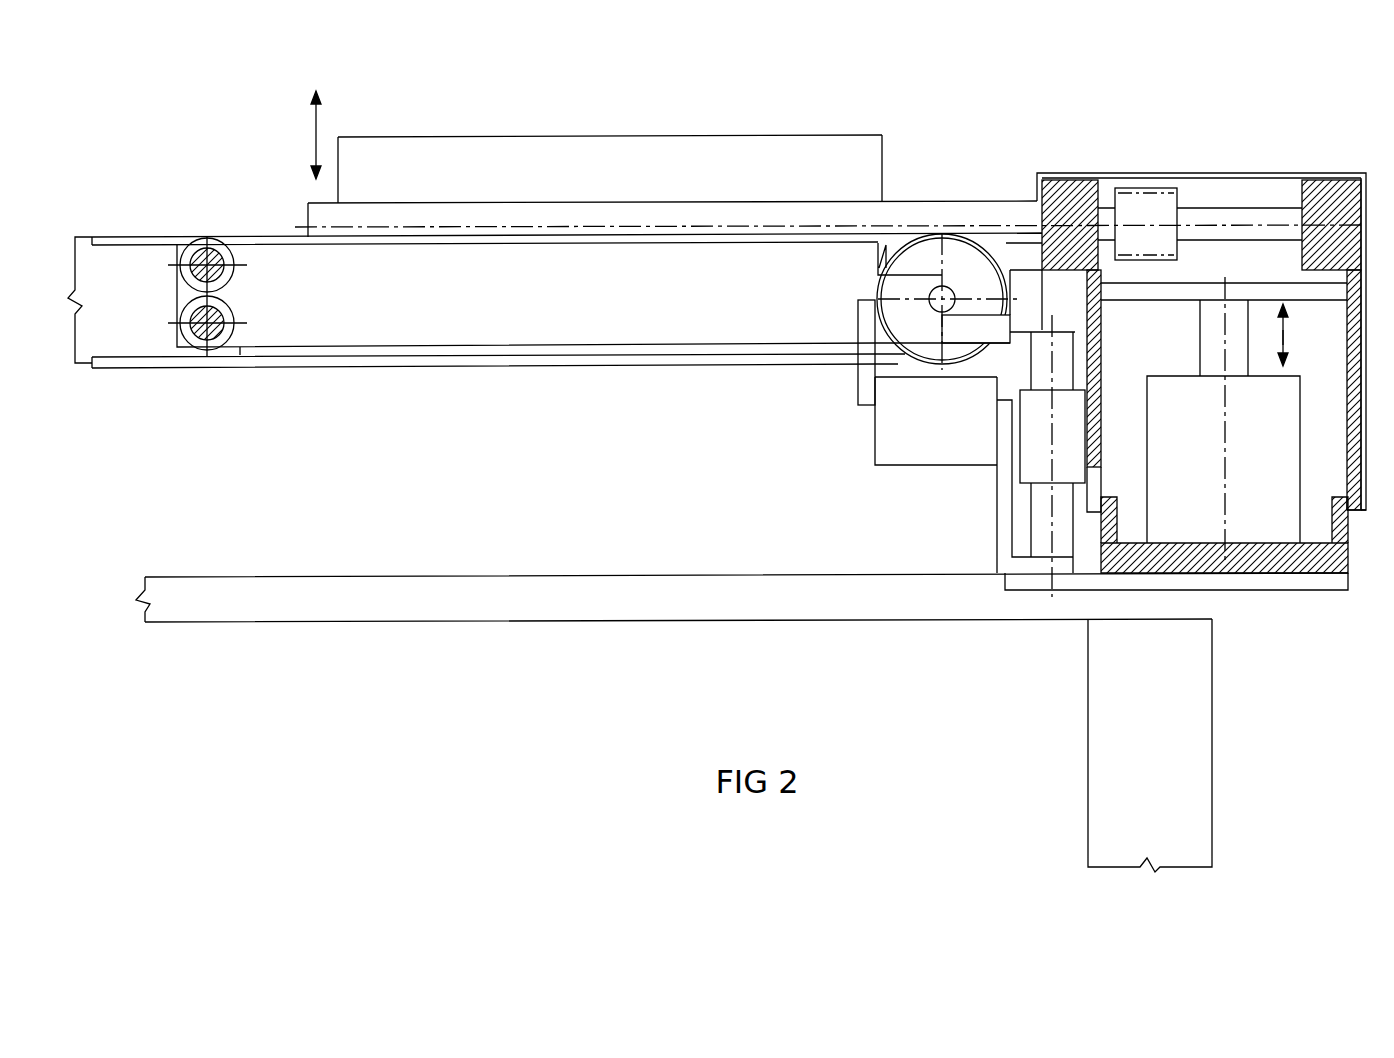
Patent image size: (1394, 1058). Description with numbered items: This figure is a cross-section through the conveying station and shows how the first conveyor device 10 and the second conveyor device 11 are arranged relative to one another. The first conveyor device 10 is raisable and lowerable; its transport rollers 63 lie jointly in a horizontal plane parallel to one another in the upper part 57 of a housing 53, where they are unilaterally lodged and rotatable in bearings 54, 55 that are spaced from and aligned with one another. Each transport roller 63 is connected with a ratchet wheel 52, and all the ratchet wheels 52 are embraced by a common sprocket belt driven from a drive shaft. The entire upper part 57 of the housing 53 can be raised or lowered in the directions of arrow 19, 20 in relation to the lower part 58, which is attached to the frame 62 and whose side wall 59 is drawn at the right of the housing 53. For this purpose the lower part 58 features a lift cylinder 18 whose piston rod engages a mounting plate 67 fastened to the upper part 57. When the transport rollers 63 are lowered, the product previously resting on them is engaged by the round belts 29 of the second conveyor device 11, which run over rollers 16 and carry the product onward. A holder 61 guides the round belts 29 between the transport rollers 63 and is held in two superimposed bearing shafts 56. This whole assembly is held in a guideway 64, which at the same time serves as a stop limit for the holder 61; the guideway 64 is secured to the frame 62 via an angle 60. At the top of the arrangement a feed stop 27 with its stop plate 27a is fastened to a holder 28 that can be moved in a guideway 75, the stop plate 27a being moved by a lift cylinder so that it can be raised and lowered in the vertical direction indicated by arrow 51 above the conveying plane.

The first conveyor device 10 is at (912, 212).
The second conveyor device 11 is at (148, 222).
The rollers 16 is at (960, 270).
The lift cylinder 18 is at (1178, 440).
The arrow 19 is at (1283, 327).
The arrow 20 is at (1283, 340).
The feed stop 27 is at (610, 126).
The stop plate 27a is at (610, 136).
The holder 28 is at (1038, 362).
The round belts 29 is at (410, 366).
The vertical movement 51 is at (313, 137).
The ratchet wheel 52 is at (1140, 193).
The housing 53 is at (1227, 173).
The bearing 54 is at (1062, 197).
The bearing 55 is at (1330, 193).
The bearing shafts 56 is at (228, 275).
The upper part 57 is at (1275, 178).
The lower part 58 is at (1308, 555).
The side wall 59 is at (1352, 520).
The angle 60 is at (1000, 517).
The holder 61 is at (767, 308).
The frame 62 is at (1180, 745).
The transport rollers 63 is at (952, 208).
The guideway 64 is at (905, 412).
The mounting plate 67 is at (1162, 292).
The guideway 75 is at (1035, 442).